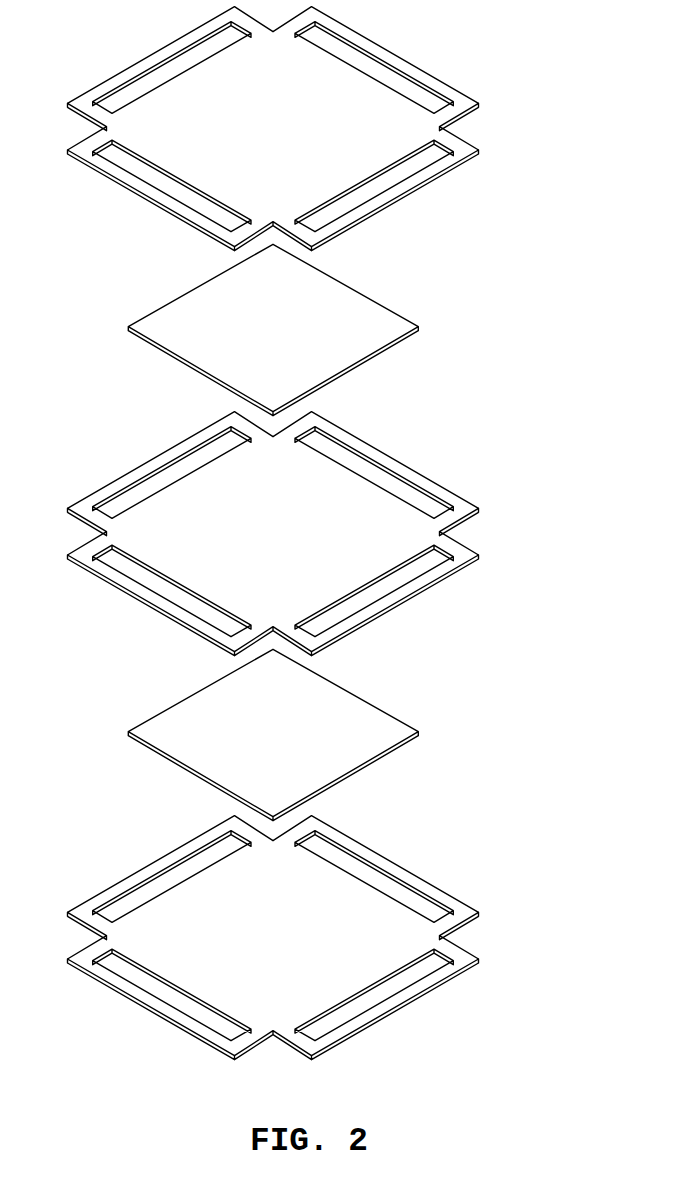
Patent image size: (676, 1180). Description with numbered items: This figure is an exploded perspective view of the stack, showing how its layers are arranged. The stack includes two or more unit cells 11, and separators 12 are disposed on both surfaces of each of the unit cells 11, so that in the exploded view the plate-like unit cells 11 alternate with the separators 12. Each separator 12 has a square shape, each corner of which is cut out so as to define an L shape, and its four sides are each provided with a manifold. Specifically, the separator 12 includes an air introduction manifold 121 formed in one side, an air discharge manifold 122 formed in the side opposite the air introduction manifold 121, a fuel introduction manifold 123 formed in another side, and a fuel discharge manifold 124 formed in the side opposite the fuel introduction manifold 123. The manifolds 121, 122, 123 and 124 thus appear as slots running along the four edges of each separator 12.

The unit cell 11 is at (398, 332).
The separator 12 is at (460, 106).
The air introduction manifold 121 is at (375, 188).
The air discharge manifold 122 is at (167, 73).
The fuel introduction manifold 123 is at (380, 72).
The fuel discharge manifold 124 is at (167, 187).